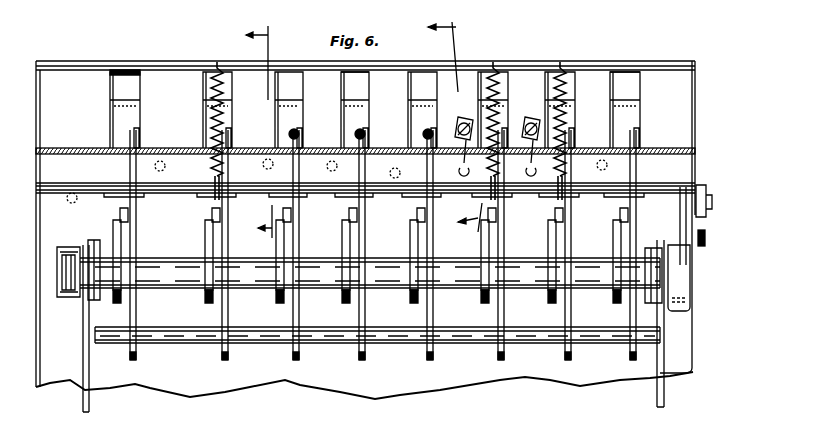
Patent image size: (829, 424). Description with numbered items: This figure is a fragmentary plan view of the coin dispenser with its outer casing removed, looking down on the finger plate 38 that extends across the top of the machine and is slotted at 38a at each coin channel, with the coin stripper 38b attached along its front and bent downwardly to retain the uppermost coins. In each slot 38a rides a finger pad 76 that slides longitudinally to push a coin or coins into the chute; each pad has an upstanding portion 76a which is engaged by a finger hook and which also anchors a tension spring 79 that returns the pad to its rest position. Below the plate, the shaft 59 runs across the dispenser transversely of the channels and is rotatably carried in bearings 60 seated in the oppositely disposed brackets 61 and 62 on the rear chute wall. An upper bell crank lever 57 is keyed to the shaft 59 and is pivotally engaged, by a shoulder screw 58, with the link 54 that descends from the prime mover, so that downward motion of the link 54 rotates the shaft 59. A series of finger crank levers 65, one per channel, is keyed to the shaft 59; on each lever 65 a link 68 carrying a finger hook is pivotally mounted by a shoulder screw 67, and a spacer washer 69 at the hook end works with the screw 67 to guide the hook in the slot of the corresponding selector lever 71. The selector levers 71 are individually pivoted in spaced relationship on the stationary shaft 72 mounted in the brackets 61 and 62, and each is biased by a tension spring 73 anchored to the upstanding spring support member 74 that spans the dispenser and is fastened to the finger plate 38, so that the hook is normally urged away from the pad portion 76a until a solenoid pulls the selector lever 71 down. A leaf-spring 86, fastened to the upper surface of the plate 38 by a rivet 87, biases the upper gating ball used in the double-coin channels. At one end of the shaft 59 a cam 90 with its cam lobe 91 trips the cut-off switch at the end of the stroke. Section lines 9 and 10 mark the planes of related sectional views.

The section line 9- 9 is at (250, 132).
The section line 10- 10 is at (455, 120).
The finger plate 38 is at (183, 78).
The slot 38a is at (112, 90).
The coin stripper 38b is at (137, 60).
The link 54 is at (705, 238).
The upper bell crank lever 57 is at (688, 233).
The shoulder screw 58 is at (704, 204).
The shaft 59 is at (195, 283).
The bearings 60 is at (655, 300).
The bracket 61 is at (660, 368).
The bracket 62 is at (90, 372).
The finger crank levers 65 is at (116, 250).
The shoulder screws 67 is at (138, 171).
The links 68 is at (128, 212).
The spacer washer 69 is at (126, 171).
The selector levers 71 is at (362, 222).
The stationary shaft 72 is at (197, 337).
The tension springs 73 is at (355, 130).
The spring support member 74 is at (84, 148).
The finger pad 76 is at (128, 116).
The upstanding portion 76a is at (120, 209).
The tension spring 79 is at (211, 130).
The leaf-spring 86 is at (460, 167).
The rivet 87 is at (495, 122).
The cam 90 is at (72, 300).
The cam lobe 91 is at (68, 258).